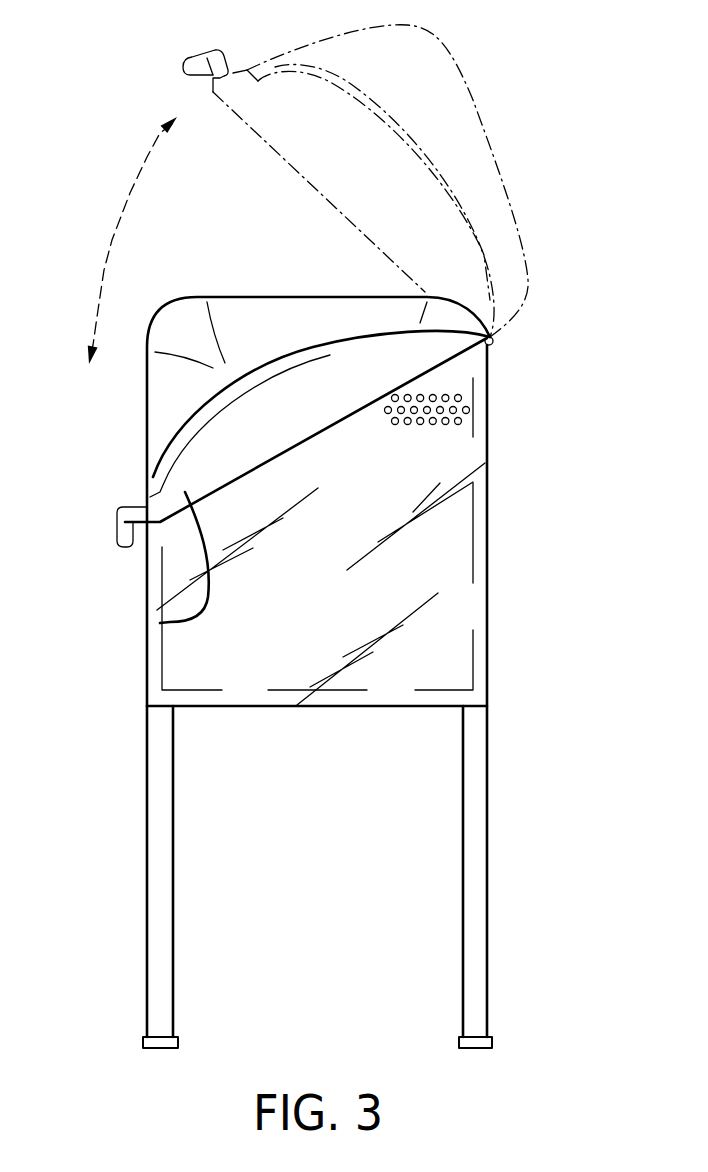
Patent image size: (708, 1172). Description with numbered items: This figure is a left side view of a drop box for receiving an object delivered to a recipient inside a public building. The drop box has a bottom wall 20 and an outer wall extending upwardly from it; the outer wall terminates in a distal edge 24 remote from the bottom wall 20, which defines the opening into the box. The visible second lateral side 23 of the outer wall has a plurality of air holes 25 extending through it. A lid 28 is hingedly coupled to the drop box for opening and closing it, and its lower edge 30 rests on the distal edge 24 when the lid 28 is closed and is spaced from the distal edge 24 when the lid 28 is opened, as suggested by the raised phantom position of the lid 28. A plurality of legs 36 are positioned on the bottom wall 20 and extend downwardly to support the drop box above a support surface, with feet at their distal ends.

The bottom wall 20 is at (395, 706).
The second lateral side 23 is at (433, 550).
The distal edge 24 is at (320, 432).
The air holes 25 is at (490, 410).
The lid 28 is at (167, 307).
The lower edge 30 is at (160, 623).
The legs 36 is at (158, 770).